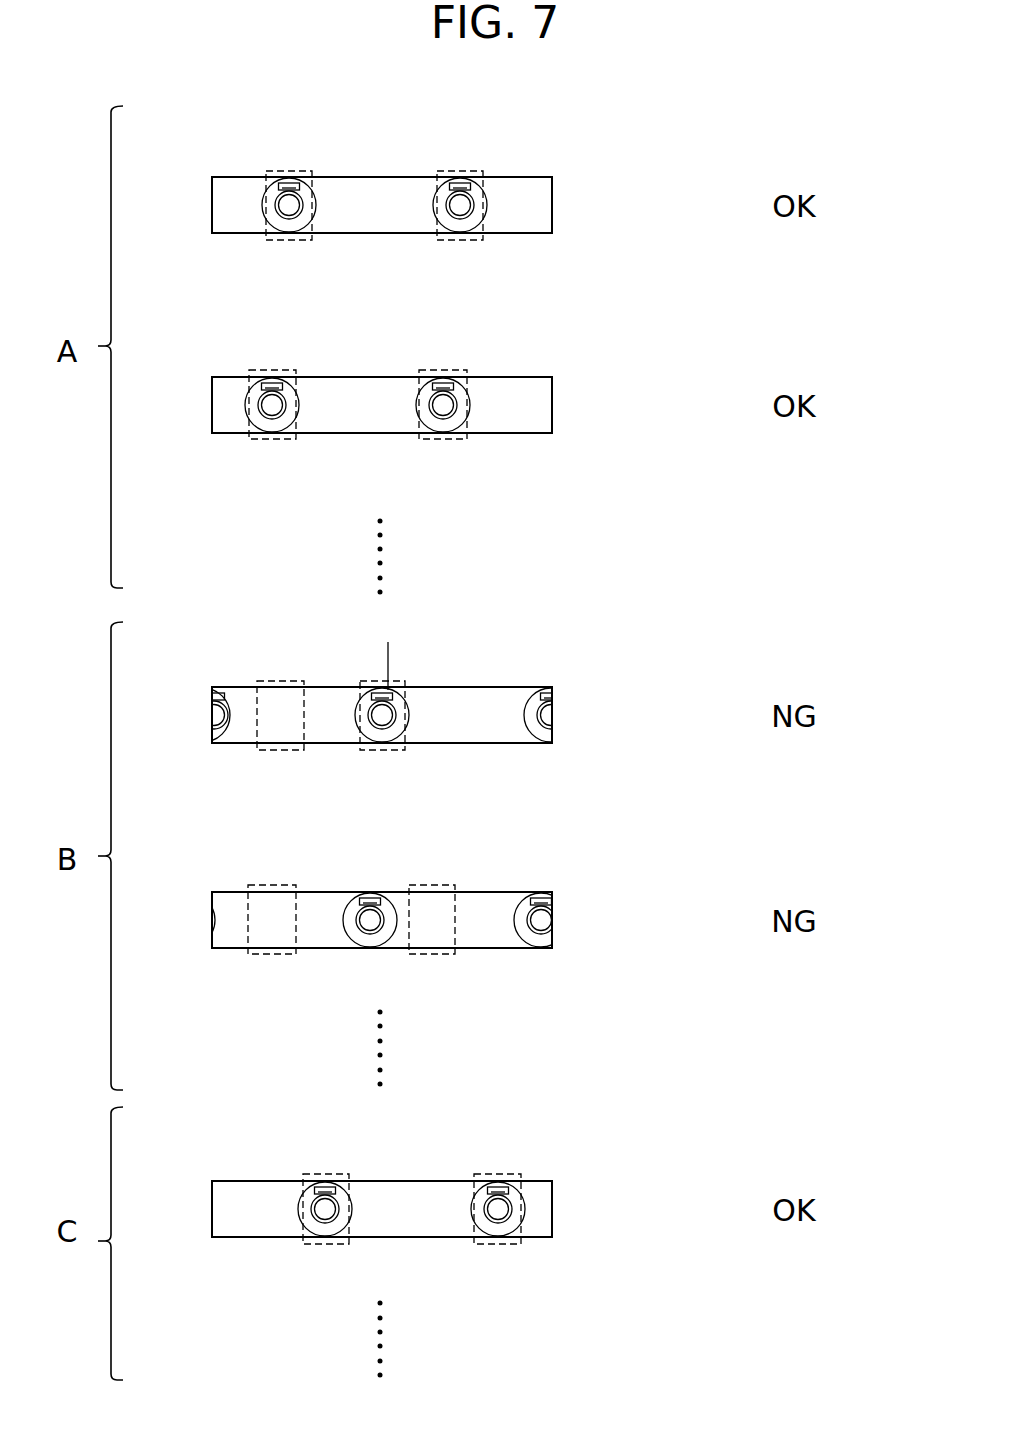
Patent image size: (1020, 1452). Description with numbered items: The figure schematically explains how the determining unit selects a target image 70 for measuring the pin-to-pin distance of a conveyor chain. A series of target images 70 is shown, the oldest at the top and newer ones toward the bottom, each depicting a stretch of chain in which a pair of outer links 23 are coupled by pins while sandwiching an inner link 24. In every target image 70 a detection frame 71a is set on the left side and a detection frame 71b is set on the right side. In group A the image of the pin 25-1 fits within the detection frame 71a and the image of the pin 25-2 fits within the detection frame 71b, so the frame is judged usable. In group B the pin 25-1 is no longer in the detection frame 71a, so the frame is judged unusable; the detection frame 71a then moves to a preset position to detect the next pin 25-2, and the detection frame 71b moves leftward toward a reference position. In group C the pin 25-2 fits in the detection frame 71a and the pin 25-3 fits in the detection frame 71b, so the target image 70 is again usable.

The target image 70 is at (212, 177).
The detection frame 71a is at (302, 171).
The detection frame 71b is at (474, 171).
The outer link 23 is at (372, 212).
The inner link 24 is at (236, 212).
The pin 25-1 is at (289, 212).
The pin 25-2 is at (460, 212).
The pin 25-3 is at (550, 718).